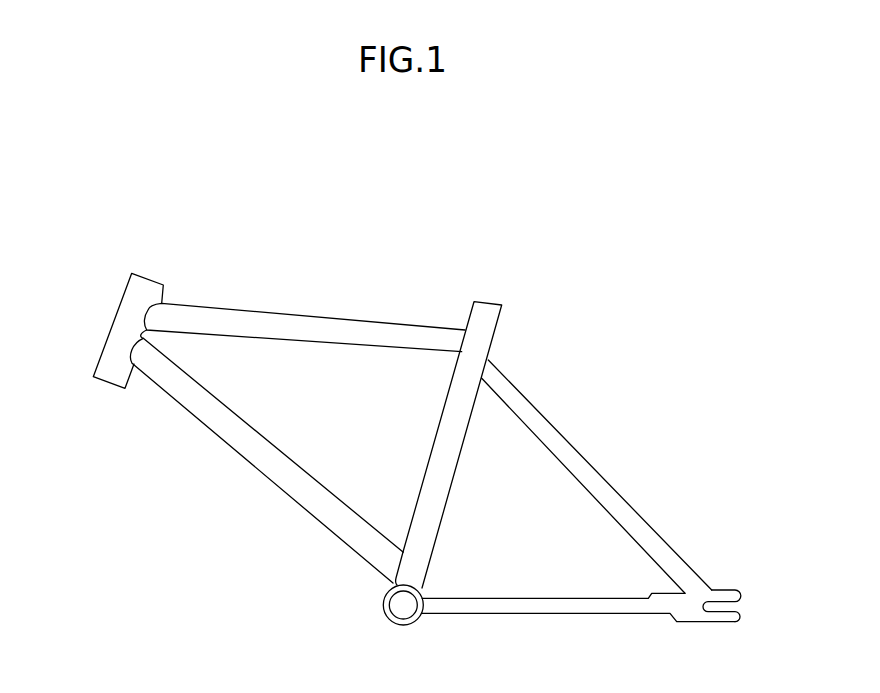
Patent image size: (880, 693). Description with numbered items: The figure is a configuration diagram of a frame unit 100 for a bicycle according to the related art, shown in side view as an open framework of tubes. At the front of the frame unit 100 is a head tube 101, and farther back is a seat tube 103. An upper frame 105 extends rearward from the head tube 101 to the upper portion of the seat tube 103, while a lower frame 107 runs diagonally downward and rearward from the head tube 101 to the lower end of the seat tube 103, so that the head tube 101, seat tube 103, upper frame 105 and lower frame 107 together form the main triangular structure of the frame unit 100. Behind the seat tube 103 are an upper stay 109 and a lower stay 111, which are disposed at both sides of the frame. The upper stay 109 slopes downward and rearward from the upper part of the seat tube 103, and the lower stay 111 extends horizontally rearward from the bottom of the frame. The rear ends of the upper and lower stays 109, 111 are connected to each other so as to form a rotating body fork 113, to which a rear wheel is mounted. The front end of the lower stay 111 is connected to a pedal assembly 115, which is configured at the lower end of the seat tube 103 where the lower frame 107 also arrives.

The frame unit 100 is at (610, 318).
The head tube 101 is at (118, 322).
The seat tube 103 is at (486, 308).
The upper frame 105 is at (279, 317).
The lower frame 107 is at (280, 481).
The upper stay 109 is at (607, 485).
The lower stay 111 is at (537, 613).
The rotating body fork 113 is at (723, 595).
The pedal assembly 115 is at (387, 620).